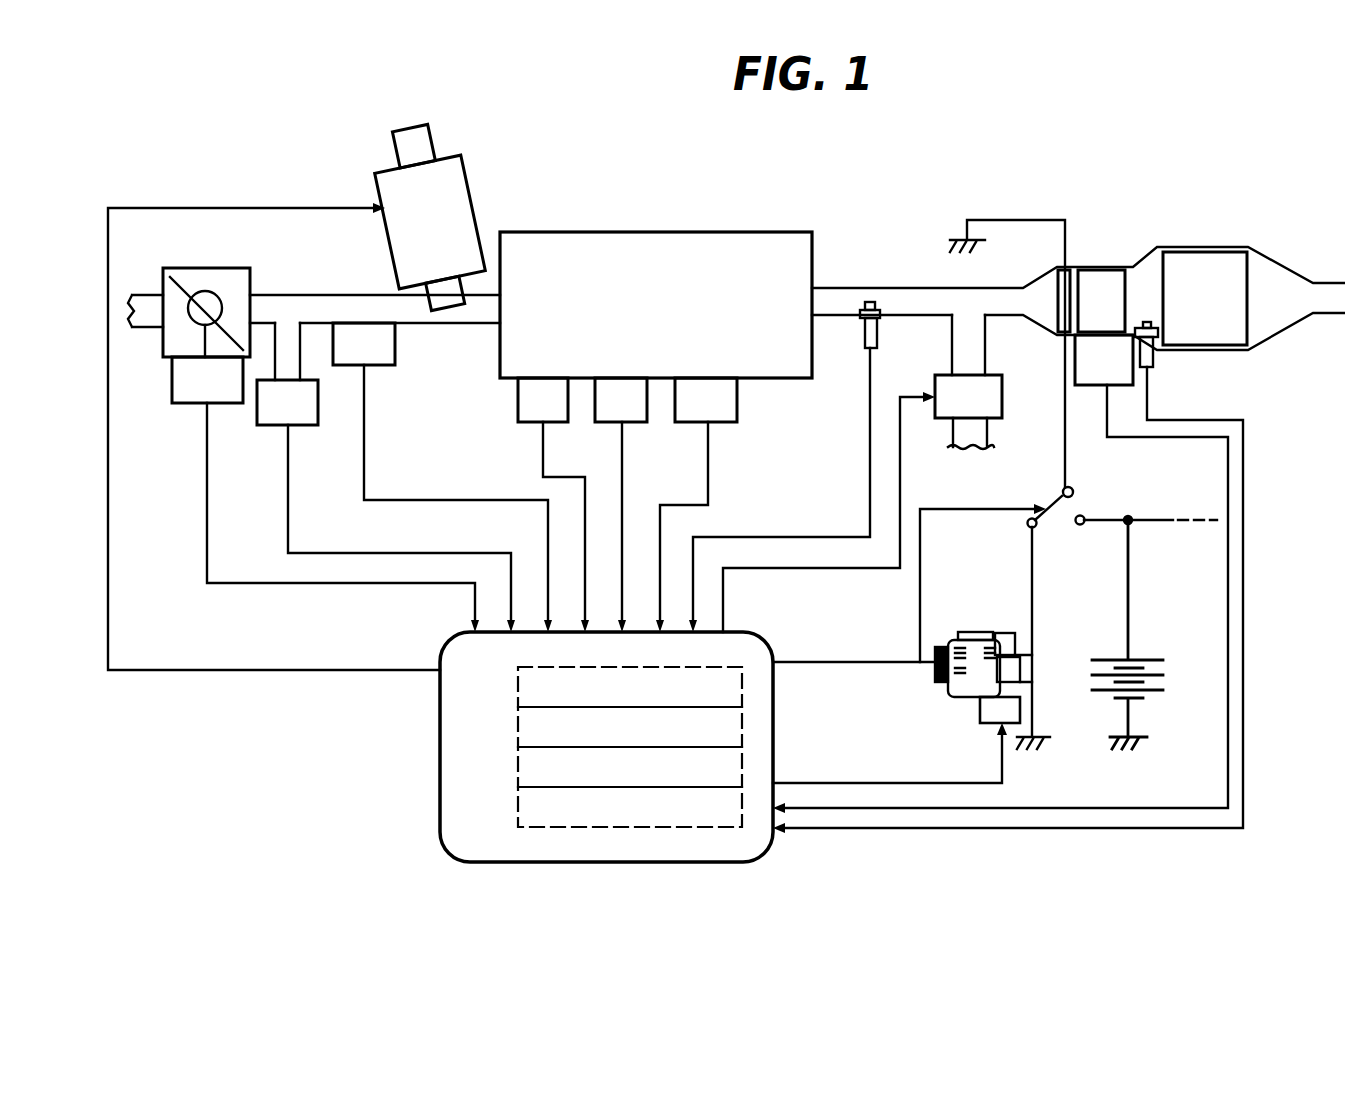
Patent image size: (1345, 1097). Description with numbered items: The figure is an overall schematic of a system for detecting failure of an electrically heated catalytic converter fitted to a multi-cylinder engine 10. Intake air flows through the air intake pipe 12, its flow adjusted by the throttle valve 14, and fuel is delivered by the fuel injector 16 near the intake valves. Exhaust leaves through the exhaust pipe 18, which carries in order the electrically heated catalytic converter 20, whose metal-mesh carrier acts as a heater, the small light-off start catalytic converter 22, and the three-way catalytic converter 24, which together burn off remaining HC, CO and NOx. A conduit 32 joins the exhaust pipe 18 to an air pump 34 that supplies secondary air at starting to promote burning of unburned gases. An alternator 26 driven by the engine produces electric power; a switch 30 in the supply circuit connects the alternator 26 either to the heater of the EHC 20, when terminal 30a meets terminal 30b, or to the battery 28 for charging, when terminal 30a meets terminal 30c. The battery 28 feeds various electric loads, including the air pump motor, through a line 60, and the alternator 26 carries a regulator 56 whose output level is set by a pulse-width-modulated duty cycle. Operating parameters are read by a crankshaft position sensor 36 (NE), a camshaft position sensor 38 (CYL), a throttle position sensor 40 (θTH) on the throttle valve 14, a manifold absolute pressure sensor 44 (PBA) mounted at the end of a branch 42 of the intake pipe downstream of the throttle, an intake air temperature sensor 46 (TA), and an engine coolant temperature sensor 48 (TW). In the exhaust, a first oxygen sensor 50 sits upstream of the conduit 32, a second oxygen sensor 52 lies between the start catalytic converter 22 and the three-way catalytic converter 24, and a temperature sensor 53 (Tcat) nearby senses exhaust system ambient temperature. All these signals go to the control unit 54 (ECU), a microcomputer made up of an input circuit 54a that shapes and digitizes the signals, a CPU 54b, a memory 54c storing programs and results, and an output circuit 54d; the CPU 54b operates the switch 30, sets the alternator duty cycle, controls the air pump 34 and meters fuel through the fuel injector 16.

The engine 10 is at (767, 232).
The air intake pipe 12 is at (328, 297).
The throttle valve 14 is at (185, 290).
The fuel injector 16 is at (477, 210).
The exhaust pipe 18 is at (897, 287).
The electrically heated catalytic converter (EHC) 20 is at (1075, 265).
The start catalytic converter 22 is at (1110, 275).
The three-way catalytic converter 24 is at (1232, 262).
The alternator 26 is at (957, 640).
The battery 28 is at (1160, 675).
The switch 30 is at (1046, 596).
The terminal 30a is at (1028, 527).
The terminal 30b is at (1078, 490).
The terminal 30c is at (1080, 528).
The conduit 32 is at (988, 357).
The air pump 34 is at (945, 420).
The crankshaft position sensor 36 is at (633, 423).
The camshaft position sensor 38 is at (730, 423).
The throttle position sensor 40 is at (228, 405).
The branch 42 is at (297, 348).
The manifold absolute pressure sensor 44 is at (313, 428).
The intake air temperature sensor 46 is at (395, 357).
The engine coolant temperature sensor 48 is at (557, 427).
The first oxygen sensor 50 is at (862, 335).
The second oxygen sensor 52 is at (1152, 362).
The temperature sensor 53 is at (1093, 388).
The control unit (ECU) 54 is at (440, 795).
The input circuit 54a is at (742, 667).
The CPU 54b is at (742, 727).
The memory 54c is at (742, 770).
The output circuit 54d is at (742, 815).
The regulator 56 is at (978, 720).
The line 60 is at (1157, 525).